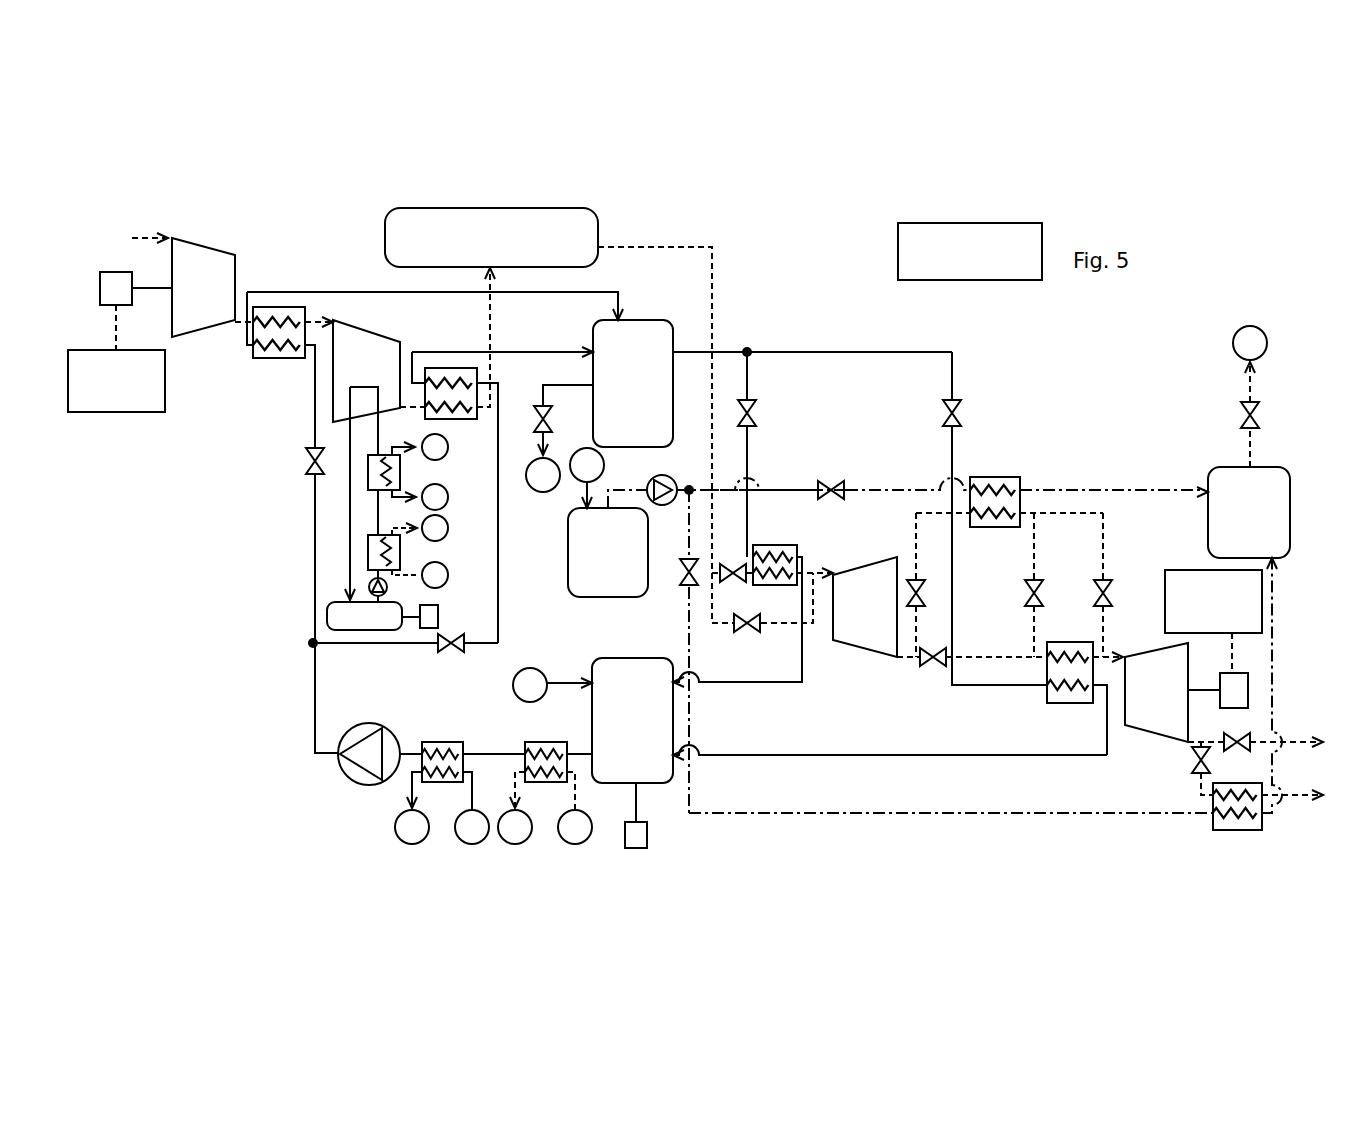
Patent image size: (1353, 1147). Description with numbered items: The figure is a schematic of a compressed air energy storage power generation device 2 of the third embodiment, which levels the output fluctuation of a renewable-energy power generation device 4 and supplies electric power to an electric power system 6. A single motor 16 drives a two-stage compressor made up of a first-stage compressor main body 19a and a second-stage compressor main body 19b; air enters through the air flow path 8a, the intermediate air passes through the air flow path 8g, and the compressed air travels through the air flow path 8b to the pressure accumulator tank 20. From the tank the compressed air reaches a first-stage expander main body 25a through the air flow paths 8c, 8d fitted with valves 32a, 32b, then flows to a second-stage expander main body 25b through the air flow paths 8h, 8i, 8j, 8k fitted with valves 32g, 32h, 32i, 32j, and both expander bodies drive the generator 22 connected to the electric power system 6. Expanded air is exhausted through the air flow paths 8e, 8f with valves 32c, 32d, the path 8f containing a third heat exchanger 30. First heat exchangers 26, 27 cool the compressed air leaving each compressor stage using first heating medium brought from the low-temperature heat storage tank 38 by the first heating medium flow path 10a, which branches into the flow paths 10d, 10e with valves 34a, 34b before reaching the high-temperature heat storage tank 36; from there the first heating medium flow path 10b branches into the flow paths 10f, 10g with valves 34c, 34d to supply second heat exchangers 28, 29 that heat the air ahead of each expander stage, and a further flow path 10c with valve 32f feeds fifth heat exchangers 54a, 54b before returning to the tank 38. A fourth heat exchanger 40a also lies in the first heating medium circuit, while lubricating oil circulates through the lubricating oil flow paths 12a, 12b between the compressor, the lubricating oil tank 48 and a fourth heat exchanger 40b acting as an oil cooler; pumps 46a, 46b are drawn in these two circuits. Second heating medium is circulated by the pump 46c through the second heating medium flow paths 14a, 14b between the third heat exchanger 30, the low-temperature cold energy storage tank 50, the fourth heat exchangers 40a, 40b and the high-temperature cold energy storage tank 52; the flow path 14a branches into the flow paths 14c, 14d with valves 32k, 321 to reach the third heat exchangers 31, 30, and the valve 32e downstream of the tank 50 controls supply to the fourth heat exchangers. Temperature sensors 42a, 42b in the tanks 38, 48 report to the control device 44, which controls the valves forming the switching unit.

The compressed air energy storage power generation device 2 is at (220, 554).
The power generation device 4 is at (117, 413).
The electric power system 6 is at (1185, 570).
The air flow path 8a is at (143, 237).
The air flow path 8b is at (490, 320).
The air flow path 8c is at (780, 625).
The air flow path 8d is at (807, 572).
The air flow path 8e is at (1307, 740).
The air flow path 8f is at (1298, 793).
The air flow path 8g is at (313, 318).
The air flow path 8h is at (992, 655).
The air flow path 8i is at (916, 528).
The air flow path 8j is at (1034, 552).
The air flow path 8k is at (1103, 523).
The first heating medium flow path 10a is at (312, 682).
The first heating medium flow path 10b is at (723, 352).
The first heating medium flow path 10c is at (543, 392).
The first heating medium flow path 10d is at (312, 636).
The first heating medium flow path 10e is at (345, 643).
The first heating medium flow path 10f is at (750, 380).
The first heating medium flow path 10g is at (803, 352).
The lubricating oil flow path 12a is at (377, 510).
The lubricating oil flow path 12b is at (348, 540).
The second heating medium flow path 14a is at (627, 489).
The second heating medium flow path 14b is at (577, 808).
The second heating medium flow path 14c is at (905, 490).
The second heating medium flow path 14d is at (822, 812).
The motor 16 is at (104, 272).
The first-stage compressor main body 19a is at (203, 242).
The second-stage compressor main body 19b is at (353, 322).
The pressure accumulator tank 20 is at (598, 220).
The generator 22 is at (1248, 677).
The first-stage expander main body 25a is at (863, 653).
The second-stage expander main body 25b is at (1138, 655).
The first heat exchanger 26 is at (287, 358).
The first heat exchanger 27 is at (452, 420).
The second heat exchanger 28 is at (767, 545).
The second heat exchanger 29 is at (1047, 697).
The third heat exchanger 30 is at (1262, 823).
The third heat exchanger 31 is at (995, 477).
The valve 32a is at (750, 632).
The valve 32b is at (733, 580).
The valve 32c is at (1240, 733).
The valve 32d is at (1193, 767).
The valve 32e is at (1243, 423).
The valve 32f is at (537, 423).
The valve 32g is at (932, 665).
The valve 32h is at (925, 595).
The valve 32i is at (1043, 593).
The valve 32j is at (1112, 593).
The valve 32k is at (827, 480).
The valve 321 is at (680, 572).
The valve 34a is at (308, 453).
The valve 34b is at (452, 652).
The valve 34c is at (755, 415).
The valve 34d is at (958, 417).
The high-temperature heat storage tank 36 is at (637, 320).
The low-temperature heat storage tank 38 is at (608, 657).
The fourth heat exchanger 40a is at (533, 742).
The fourth heat exchanger 40b is at (368, 563).
The temperature sensor 42a is at (647, 838).
The temperature sensor 42b is at (438, 615).
The control device 44 is at (898, 253).
The pump 46a is at (340, 768).
The pump 46b is at (387, 587).
The pump 46c is at (661, 476).
The lubricating oil tank 48 is at (327, 617).
The low-temperature cold energy storage tank 50 is at (1290, 485).
The high-temperature cold energy storage tank 52 is at (568, 577).
The fifth heat exchanger 54a is at (440, 742).
The fifth heat exchanger 54b is at (368, 472).